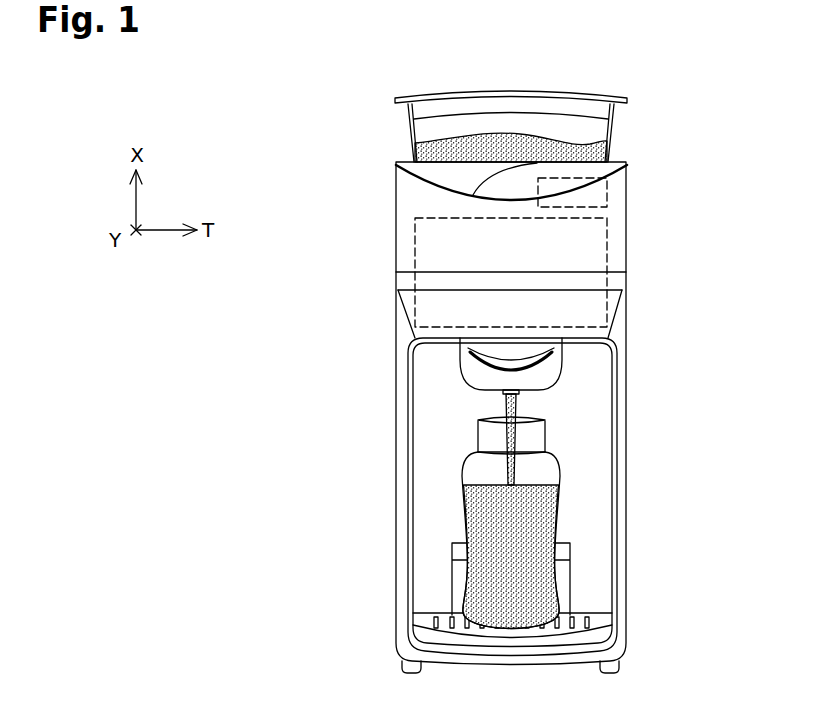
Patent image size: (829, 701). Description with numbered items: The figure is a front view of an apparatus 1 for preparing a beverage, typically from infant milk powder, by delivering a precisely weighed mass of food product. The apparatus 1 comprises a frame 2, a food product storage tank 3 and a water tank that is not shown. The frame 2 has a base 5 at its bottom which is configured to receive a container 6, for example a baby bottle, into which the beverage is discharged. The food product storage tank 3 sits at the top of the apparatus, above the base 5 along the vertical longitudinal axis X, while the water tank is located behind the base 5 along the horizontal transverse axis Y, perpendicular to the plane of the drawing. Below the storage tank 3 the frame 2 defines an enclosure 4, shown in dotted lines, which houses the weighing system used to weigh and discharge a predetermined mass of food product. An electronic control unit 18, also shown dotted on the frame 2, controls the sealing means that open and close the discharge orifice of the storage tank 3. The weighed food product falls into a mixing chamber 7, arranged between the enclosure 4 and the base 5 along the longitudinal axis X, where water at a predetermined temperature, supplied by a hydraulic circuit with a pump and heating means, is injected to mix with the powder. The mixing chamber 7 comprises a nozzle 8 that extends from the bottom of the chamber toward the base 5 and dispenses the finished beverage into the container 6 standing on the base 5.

The apparatus 1 is at (564, 382).
The frame 2 is at (618, 548).
The food product storage tank 3 is at (590, 156).
The enclosure 4 is at (607, 238).
The base 5 is at (597, 637).
The container 6 is at (555, 492).
The mixing chamber 7 is at (542, 352).
The nozzle 8 is at (498, 393).
The electronic control unit 18 is at (607, 193).